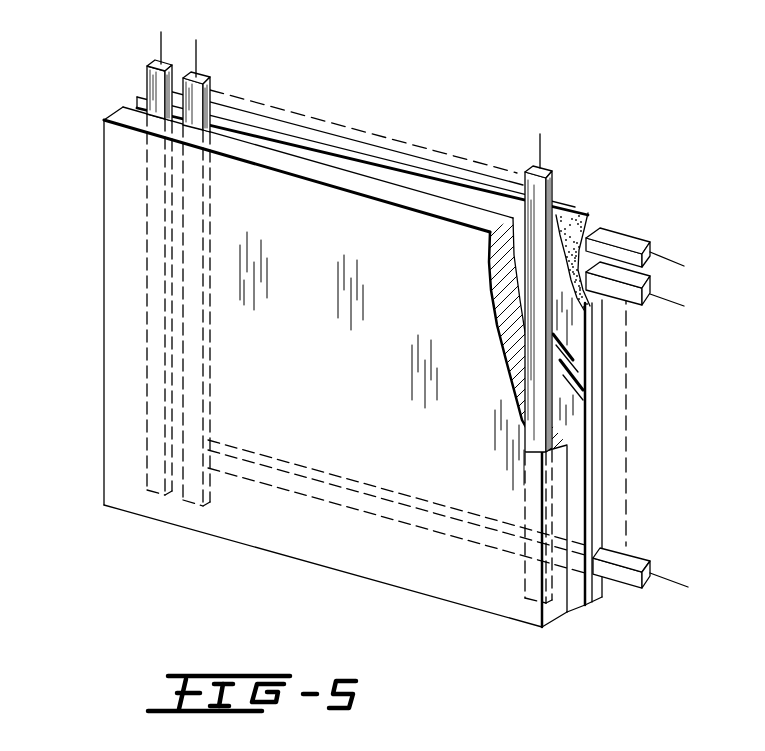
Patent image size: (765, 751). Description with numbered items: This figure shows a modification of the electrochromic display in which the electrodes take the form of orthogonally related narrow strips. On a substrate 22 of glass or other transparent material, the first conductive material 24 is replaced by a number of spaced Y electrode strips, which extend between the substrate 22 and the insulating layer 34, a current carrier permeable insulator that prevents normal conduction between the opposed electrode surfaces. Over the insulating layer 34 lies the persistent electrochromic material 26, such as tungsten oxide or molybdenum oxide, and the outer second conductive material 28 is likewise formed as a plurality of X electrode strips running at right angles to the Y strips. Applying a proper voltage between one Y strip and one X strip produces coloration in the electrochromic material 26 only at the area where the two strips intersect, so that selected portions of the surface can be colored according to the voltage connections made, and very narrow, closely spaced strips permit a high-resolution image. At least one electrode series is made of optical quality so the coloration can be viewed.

The substrate 22 is at (120, 113).
The conductive material 24 is at (170, 73).
The persistent electrochromic material 26 is at (588, 357).
The second conductive material 28 is at (615, 274).
The insulating layer 34 is at (581, 387).